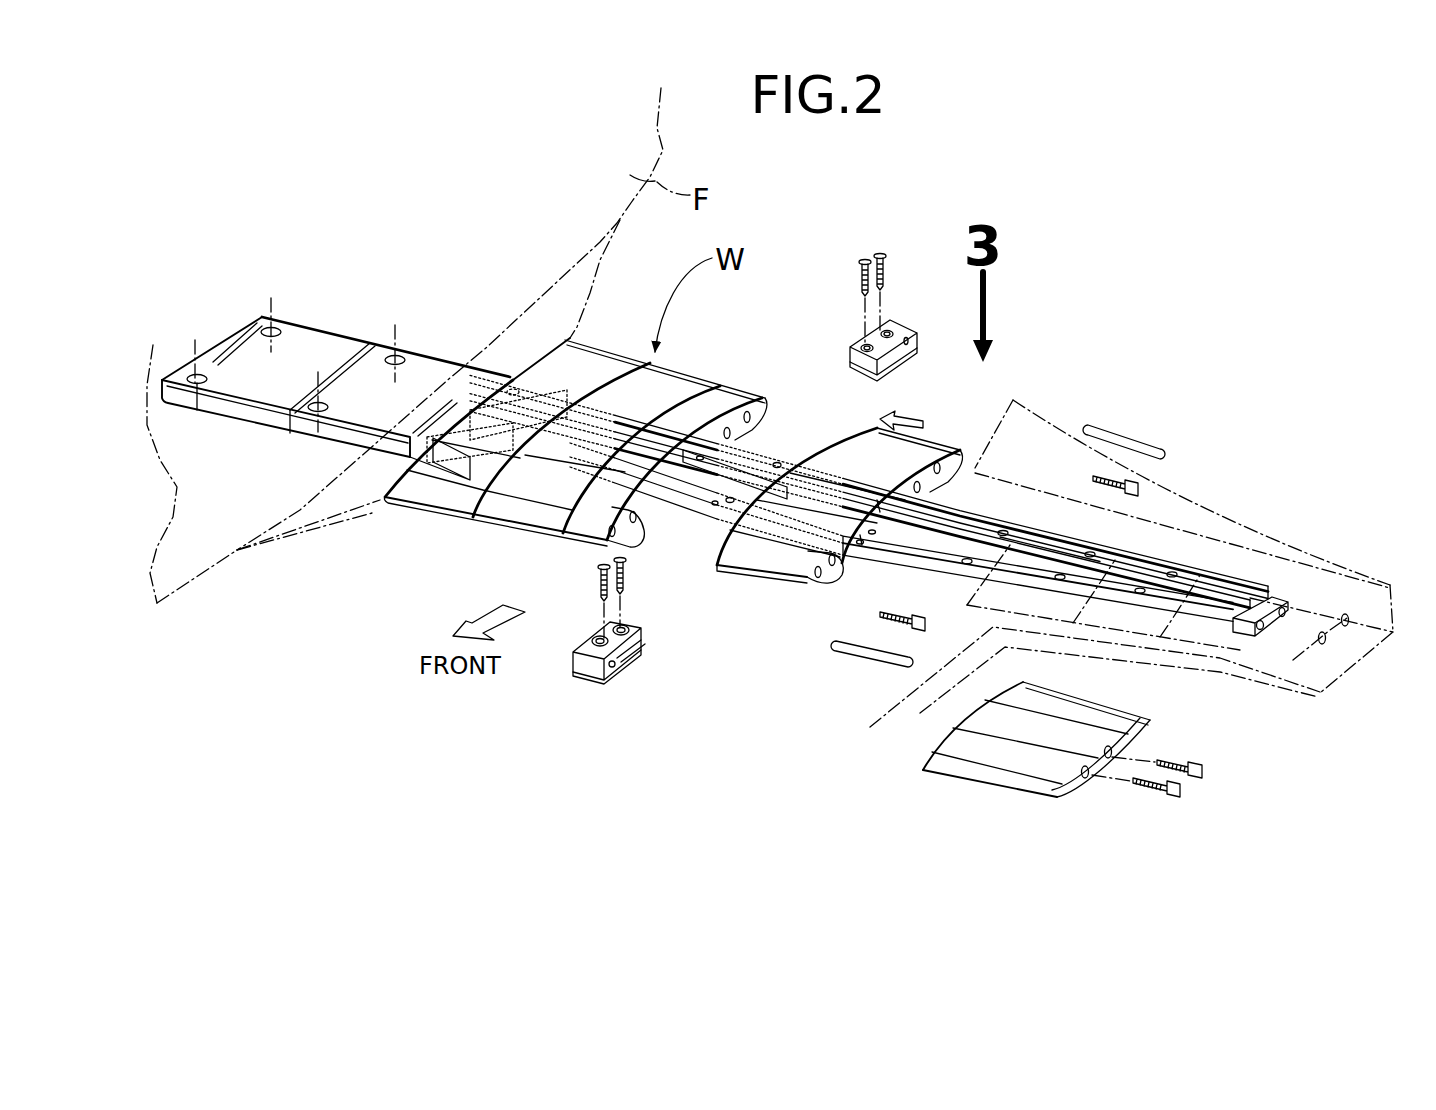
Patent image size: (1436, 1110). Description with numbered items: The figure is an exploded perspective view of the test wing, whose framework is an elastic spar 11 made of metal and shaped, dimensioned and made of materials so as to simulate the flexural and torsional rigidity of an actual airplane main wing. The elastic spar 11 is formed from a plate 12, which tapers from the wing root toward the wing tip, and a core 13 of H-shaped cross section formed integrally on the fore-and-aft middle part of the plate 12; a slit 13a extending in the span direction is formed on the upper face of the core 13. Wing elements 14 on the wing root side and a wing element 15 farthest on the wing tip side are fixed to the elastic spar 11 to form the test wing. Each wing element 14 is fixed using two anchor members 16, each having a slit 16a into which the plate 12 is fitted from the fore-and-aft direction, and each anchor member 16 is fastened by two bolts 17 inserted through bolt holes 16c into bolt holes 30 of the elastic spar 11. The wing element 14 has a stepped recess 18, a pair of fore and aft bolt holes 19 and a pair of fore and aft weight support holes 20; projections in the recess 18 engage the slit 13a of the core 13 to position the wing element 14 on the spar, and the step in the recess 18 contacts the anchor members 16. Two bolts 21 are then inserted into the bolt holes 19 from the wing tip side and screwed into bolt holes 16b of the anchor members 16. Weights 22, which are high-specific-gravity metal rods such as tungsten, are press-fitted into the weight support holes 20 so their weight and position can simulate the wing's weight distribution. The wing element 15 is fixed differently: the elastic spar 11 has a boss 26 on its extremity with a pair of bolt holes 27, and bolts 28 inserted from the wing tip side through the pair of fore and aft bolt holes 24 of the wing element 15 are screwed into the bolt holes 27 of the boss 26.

The elastic spar 11 is at (911, 559).
The plate 12 is at (988, 568).
The core 13 is at (1113, 556).
The slit 13a is at (1036, 543).
The wing element 14 is at (425, 512).
The wing element 15 is at (1010, 761).
The anchor member 16 is at (731, 501).
The slit 16a is at (851, 356).
The bolt hole 16b is at (906, 337).
The bolt hole 16c is at (900, 338).
The bolt 17 is at (880, 258).
The stepped recess 18 is at (696, 446).
The bolt hole 19 is at (724, 425).
The weight support hole 20 is at (603, 516).
The bolt 21 is at (1141, 480).
The weight 22 is at (1118, 440).
The bolt hole 24 is at (1107, 758).
The boss 26 is at (1273, 598).
The bolt hole 27 is at (1283, 617).
The bolt 28 is at (1183, 792).
The bolt hole 30 is at (770, 460).